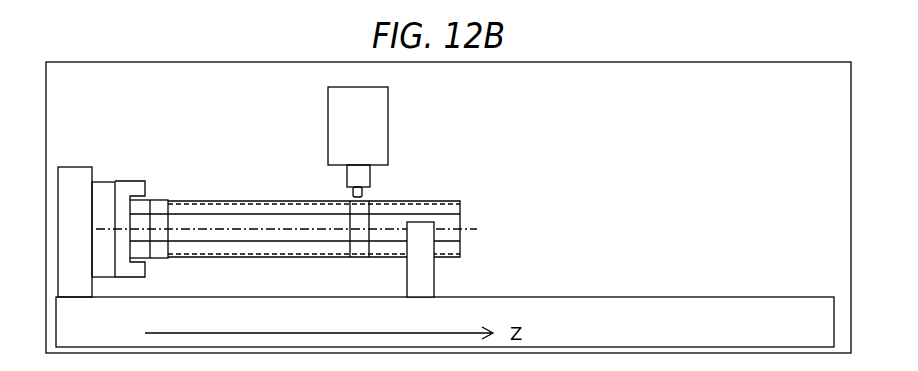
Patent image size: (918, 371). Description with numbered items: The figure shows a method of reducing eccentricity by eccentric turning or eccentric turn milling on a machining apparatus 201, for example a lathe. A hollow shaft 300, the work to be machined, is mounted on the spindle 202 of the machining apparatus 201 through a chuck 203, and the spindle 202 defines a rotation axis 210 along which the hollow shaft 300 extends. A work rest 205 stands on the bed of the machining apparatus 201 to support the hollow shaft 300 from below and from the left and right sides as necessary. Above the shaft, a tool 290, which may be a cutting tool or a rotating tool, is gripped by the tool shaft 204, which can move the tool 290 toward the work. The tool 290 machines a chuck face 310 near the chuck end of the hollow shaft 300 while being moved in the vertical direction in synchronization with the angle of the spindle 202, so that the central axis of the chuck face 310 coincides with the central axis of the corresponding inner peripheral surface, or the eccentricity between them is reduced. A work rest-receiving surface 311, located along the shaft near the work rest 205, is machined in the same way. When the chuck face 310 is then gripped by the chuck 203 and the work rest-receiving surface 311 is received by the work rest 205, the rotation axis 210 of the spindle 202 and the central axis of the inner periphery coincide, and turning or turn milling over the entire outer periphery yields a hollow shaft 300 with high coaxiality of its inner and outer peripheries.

The machining apparatus 201 is at (79, 183).
The spindle 202 is at (97, 190).
The chuck 203 is at (134, 183).
The tool shaft 204 is at (378, 103).
The work rest 205 is at (427, 270).
The rotation axis 210 is at (205, 228).
The tool 290 is at (363, 190).
The hollow shaft 300 is at (258, 200).
The chuck face 310 is at (166, 258).
The work rest-receiving surface 311 is at (353, 258).